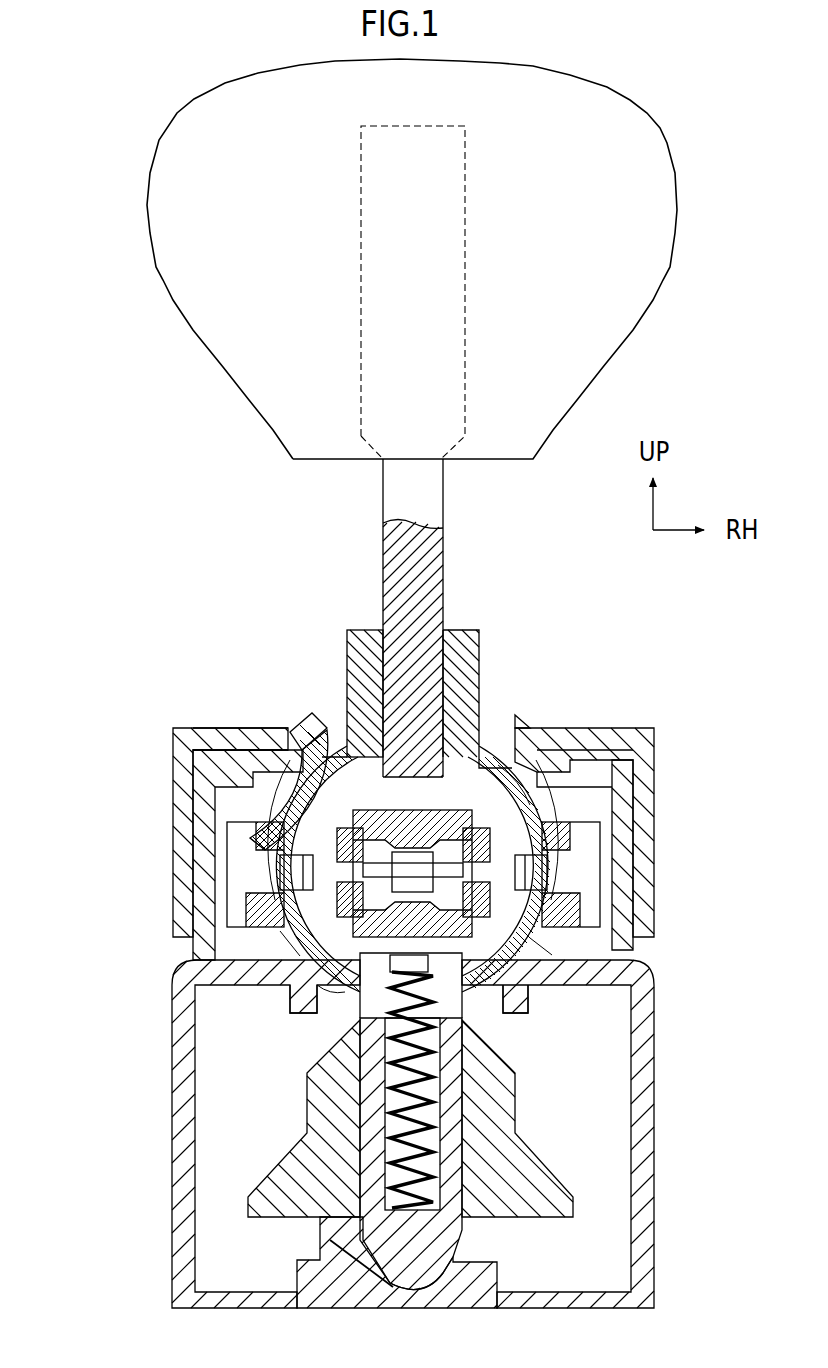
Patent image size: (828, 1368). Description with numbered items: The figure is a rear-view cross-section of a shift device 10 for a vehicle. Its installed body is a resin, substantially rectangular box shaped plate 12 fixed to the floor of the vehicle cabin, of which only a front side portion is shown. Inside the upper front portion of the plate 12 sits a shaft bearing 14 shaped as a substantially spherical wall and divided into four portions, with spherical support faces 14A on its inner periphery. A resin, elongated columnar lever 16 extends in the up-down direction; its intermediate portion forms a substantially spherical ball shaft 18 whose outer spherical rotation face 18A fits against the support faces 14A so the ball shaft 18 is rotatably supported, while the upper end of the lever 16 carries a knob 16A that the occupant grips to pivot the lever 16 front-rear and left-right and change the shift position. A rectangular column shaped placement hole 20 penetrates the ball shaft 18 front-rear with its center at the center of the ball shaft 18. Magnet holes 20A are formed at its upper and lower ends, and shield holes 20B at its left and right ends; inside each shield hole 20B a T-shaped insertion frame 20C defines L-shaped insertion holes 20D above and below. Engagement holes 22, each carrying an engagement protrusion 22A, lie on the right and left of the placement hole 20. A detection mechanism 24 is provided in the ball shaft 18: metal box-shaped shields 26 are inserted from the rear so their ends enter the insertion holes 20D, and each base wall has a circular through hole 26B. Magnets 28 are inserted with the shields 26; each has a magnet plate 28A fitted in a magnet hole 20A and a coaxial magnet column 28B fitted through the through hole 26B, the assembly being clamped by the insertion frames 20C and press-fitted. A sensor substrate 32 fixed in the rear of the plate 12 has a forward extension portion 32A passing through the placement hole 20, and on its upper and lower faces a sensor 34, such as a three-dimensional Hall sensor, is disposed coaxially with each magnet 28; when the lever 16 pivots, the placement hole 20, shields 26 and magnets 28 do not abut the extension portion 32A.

The shift device 10 is at (138, 507).
The plate 12 is at (170, 1103).
The shaft bearing 14 is at (245, 778).
The support faces 14A is at (525, 757).
The lever 16 is at (346, 630).
The knob 16A is at (676, 240).
The ball shaft 18 is at (240, 805).
The rotation face 18A is at (270, 735).
The placement hole 20 is at (472, 883).
The magnet holes 20A is at (340, 780).
The shield holes 20B is at (363, 878).
The insertion frames 20C is at (345, 905).
The insertion holes 20D is at (340, 888).
The engagement holes 22 is at (240, 872).
The engagement protrusion 22A is at (285, 873).
The detection mechanism 24 is at (481, 790).
The shields 26 is at (300, 828).
The through hole 26B is at (325, 990).
The magnets 28 is at (300, 730).
The magnet plate 28A is at (350, 755).
The magnet column 28B is at (255, 848).
The sensor substrate 32 is at (413, 649).
The extension portion 32A is at (462, 790).
The sensor 34 is at (428, 745).